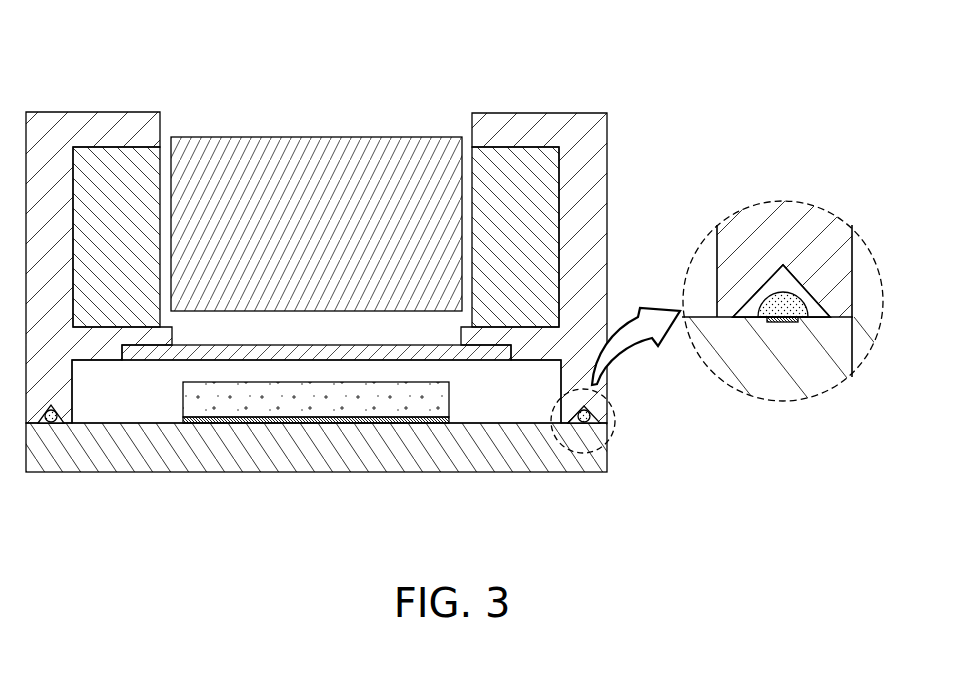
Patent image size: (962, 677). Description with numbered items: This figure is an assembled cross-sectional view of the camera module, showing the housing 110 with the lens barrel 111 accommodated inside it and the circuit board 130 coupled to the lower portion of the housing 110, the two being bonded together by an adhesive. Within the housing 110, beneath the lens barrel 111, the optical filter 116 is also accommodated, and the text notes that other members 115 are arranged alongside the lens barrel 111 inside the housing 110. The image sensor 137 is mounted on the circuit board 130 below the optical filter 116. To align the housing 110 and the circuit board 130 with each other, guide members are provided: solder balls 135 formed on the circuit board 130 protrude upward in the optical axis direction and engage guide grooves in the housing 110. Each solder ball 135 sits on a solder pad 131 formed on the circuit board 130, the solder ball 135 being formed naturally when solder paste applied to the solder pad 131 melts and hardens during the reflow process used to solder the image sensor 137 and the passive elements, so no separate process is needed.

The housing 110 is at (598, 160).
The lens barrel 111 is at (372, 150).
The support member 115 is at (507, 160).
The optical filter 116 is at (422, 355).
The circuit board 130 is at (477, 457).
The solder pad 131 is at (790, 323).
The solder ball 135 is at (755, 322).
The image sensor 137 is at (342, 420).